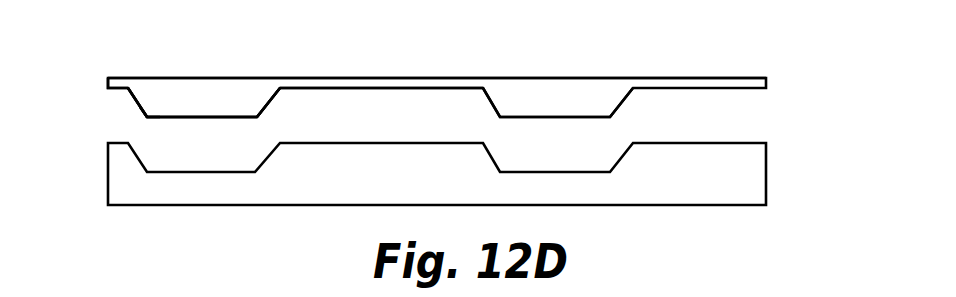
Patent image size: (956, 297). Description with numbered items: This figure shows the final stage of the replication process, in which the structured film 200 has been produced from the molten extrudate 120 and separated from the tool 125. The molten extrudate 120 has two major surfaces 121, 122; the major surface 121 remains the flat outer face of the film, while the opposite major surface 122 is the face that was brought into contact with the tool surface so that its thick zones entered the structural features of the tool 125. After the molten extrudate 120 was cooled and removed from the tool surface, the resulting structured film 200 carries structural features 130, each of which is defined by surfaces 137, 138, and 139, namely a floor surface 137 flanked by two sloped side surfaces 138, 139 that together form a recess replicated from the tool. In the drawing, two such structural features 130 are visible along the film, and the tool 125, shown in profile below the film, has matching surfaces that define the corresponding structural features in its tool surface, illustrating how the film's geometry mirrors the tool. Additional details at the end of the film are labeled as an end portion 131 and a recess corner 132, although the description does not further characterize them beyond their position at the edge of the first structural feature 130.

The structured film 200 is at (430, 108).
The molten extrudate 120 is at (752, 82).
The major surface 121 is at (441, 77).
The major surface 122 is at (332, 90).
The tool 125 is at (752, 183).
The structural features 130 is at (183, 105).
The end portion 131 is at (120, 96).
The recess corner 132 is at (147, 118).
The surface 137 is at (218, 119).
The surface 138 is at (140, 107).
The surface 139 is at (266, 106).